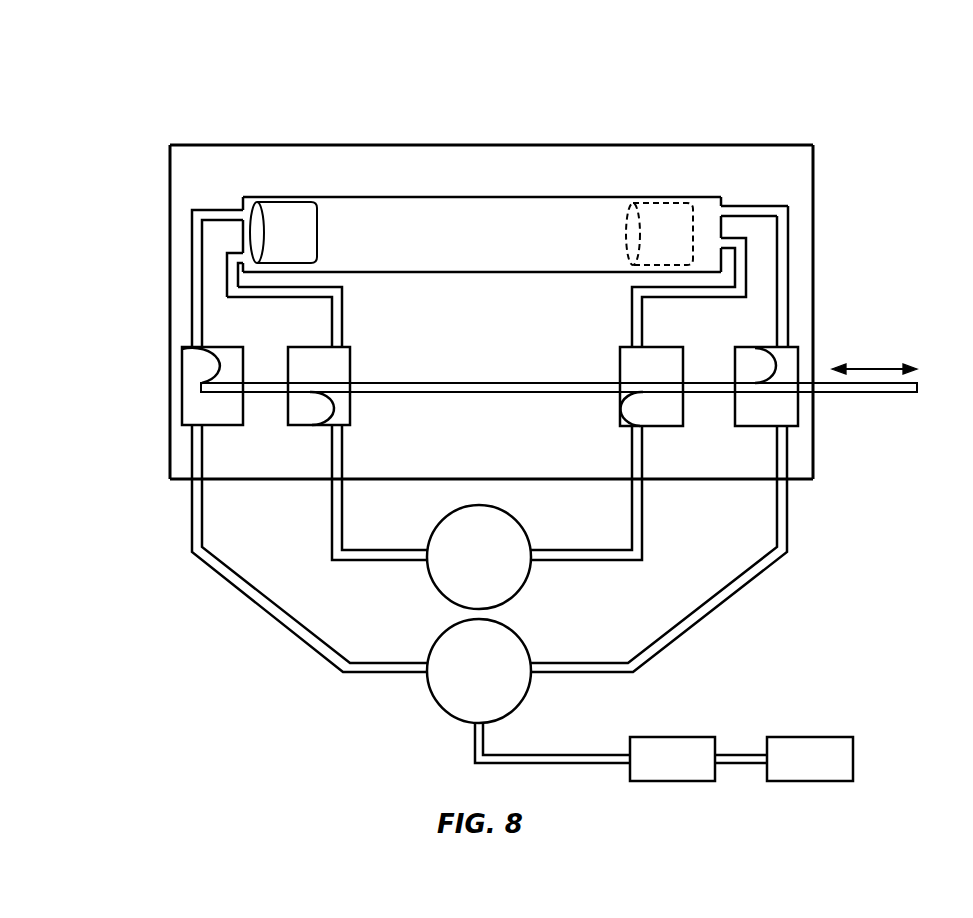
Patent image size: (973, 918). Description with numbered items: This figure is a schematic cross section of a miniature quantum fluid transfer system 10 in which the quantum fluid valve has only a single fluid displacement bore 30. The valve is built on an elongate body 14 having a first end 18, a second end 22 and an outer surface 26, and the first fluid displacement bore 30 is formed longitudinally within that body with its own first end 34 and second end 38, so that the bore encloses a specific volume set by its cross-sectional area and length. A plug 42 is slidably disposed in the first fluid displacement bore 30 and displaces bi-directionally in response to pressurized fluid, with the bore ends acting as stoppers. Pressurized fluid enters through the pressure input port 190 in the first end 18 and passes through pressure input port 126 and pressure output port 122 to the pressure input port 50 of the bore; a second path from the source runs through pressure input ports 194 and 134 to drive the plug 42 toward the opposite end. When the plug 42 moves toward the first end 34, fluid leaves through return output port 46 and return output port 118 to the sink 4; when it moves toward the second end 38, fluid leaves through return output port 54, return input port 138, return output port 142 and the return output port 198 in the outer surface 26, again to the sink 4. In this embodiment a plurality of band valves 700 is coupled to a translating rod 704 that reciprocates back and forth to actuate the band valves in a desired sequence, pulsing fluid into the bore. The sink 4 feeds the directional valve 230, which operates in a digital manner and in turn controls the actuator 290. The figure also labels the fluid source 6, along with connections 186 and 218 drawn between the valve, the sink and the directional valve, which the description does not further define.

The quantum fluid transfer system 10 is at (830, 120).
The elongate body 14 is at (468, 162).
The first end 18 is at (190, 153).
The second end 22 is at (783, 182).
The outer surface 26 is at (562, 146).
The first fluid displacement bore 30 is at (380, 213).
The first end 34 is at (248, 197).
The second end 38 is at (700, 207).
The plug 42 is at (290, 220).
The return output port 46 is at (203, 190).
The pressure input port 50 is at (218, 242).
The return output port 54 is at (747, 187).
The return output port 118 is at (203, 440).
The pressure output port 122 is at (360, 332).
The pressure input port 126 is at (367, 442).
The pressure input port 134 is at (602, 435).
The return input port 138 is at (760, 332).
The return output port 142 is at (747, 443).
The return line to sink 186 is at (212, 497).
The pressure input port 190 is at (367, 495).
The pressure input port 194 is at (597, 490).
The return output port 198 is at (753, 503).
The band valves 700 is at (180, 393).
The translating rod 704 is at (873, 390).
The pressure source 6 is at (503, 587).
The sink 4 is at (507, 702).
The conduit 218 is at (547, 757).
The directional valve 230 is at (697, 772).
The actuator 290 is at (822, 767).